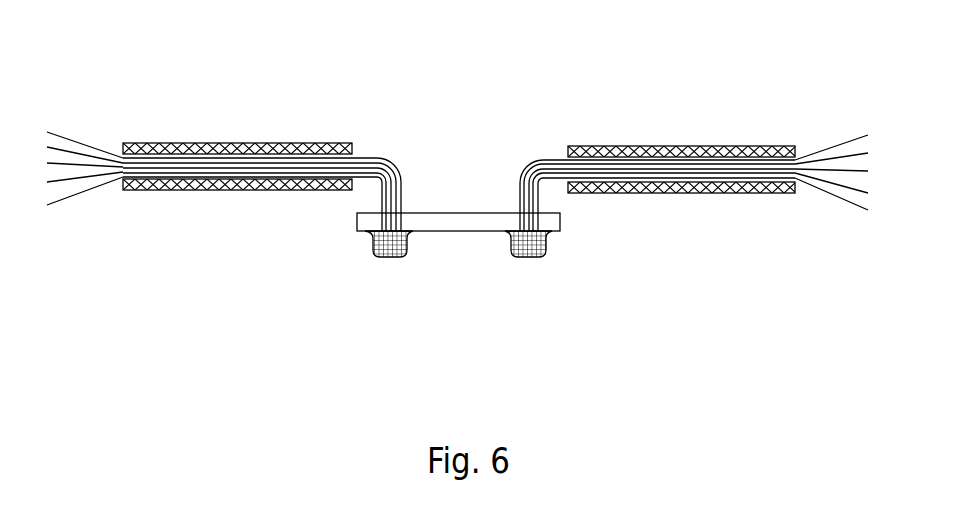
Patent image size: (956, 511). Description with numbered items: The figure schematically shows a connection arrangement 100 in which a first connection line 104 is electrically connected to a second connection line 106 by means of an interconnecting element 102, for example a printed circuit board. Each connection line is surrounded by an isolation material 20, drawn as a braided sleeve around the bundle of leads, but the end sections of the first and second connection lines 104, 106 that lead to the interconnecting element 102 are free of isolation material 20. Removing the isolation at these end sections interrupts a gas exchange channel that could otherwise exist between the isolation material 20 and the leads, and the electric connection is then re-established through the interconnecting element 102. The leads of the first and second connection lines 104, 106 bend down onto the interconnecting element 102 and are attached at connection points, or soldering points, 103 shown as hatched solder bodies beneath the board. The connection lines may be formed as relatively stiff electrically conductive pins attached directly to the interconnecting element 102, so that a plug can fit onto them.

The connection arrangement 100 is at (457, 193).
The isolation material 20 is at (207, 143).
The interconnecting element 102 is at (460, 232).
The connection point, soldering point 103 is at (547, 252).
The first connection line 104 is at (78, 141).
The second connection line 106 is at (830, 150).